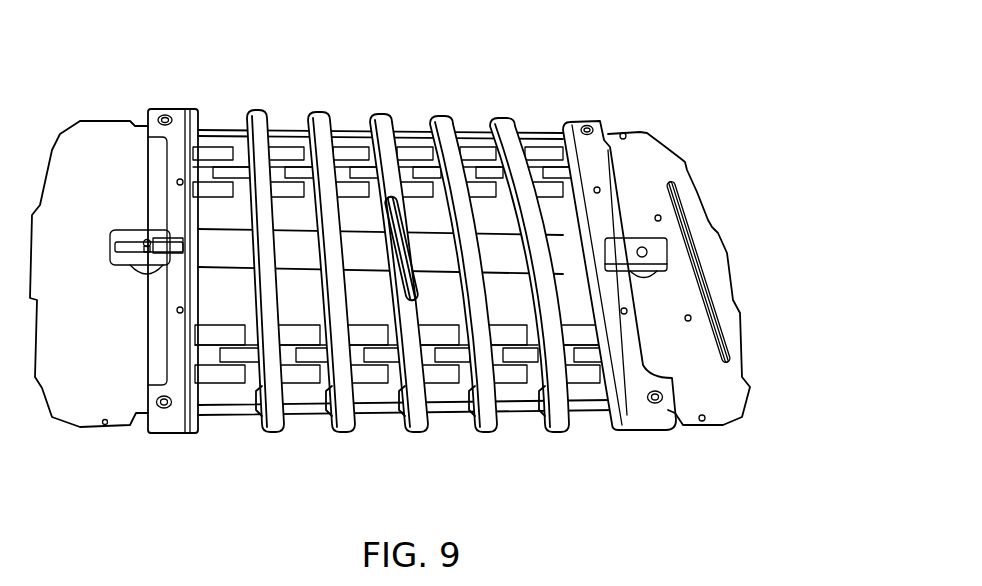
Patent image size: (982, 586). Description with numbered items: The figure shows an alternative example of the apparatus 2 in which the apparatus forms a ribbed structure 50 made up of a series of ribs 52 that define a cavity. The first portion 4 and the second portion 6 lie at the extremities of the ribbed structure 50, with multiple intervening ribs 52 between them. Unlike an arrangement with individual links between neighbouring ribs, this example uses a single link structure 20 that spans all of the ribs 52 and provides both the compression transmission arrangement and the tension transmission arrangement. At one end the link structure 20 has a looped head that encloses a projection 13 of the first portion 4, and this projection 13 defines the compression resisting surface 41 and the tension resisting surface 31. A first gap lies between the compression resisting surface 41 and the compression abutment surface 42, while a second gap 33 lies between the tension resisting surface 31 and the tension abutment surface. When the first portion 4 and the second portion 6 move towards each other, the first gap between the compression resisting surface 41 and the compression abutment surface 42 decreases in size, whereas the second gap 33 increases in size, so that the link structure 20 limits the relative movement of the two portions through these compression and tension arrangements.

The apparatus 2 is at (445, 291).
The first portion 4 is at (105, 289).
The second portion 6 is at (663, 302).
The projection 13 is at (146, 240).
The link structure 20 is at (243, 258).
The tension resisting surface 31 is at (128, 243).
The second gap 33 is at (118, 250).
The compression resisting surface 41 is at (160, 238).
The compression abutment surface 42 is at (165, 265).
The ribbed structure 50 is at (411, 291).
The ribs 52 is at (256, 111).